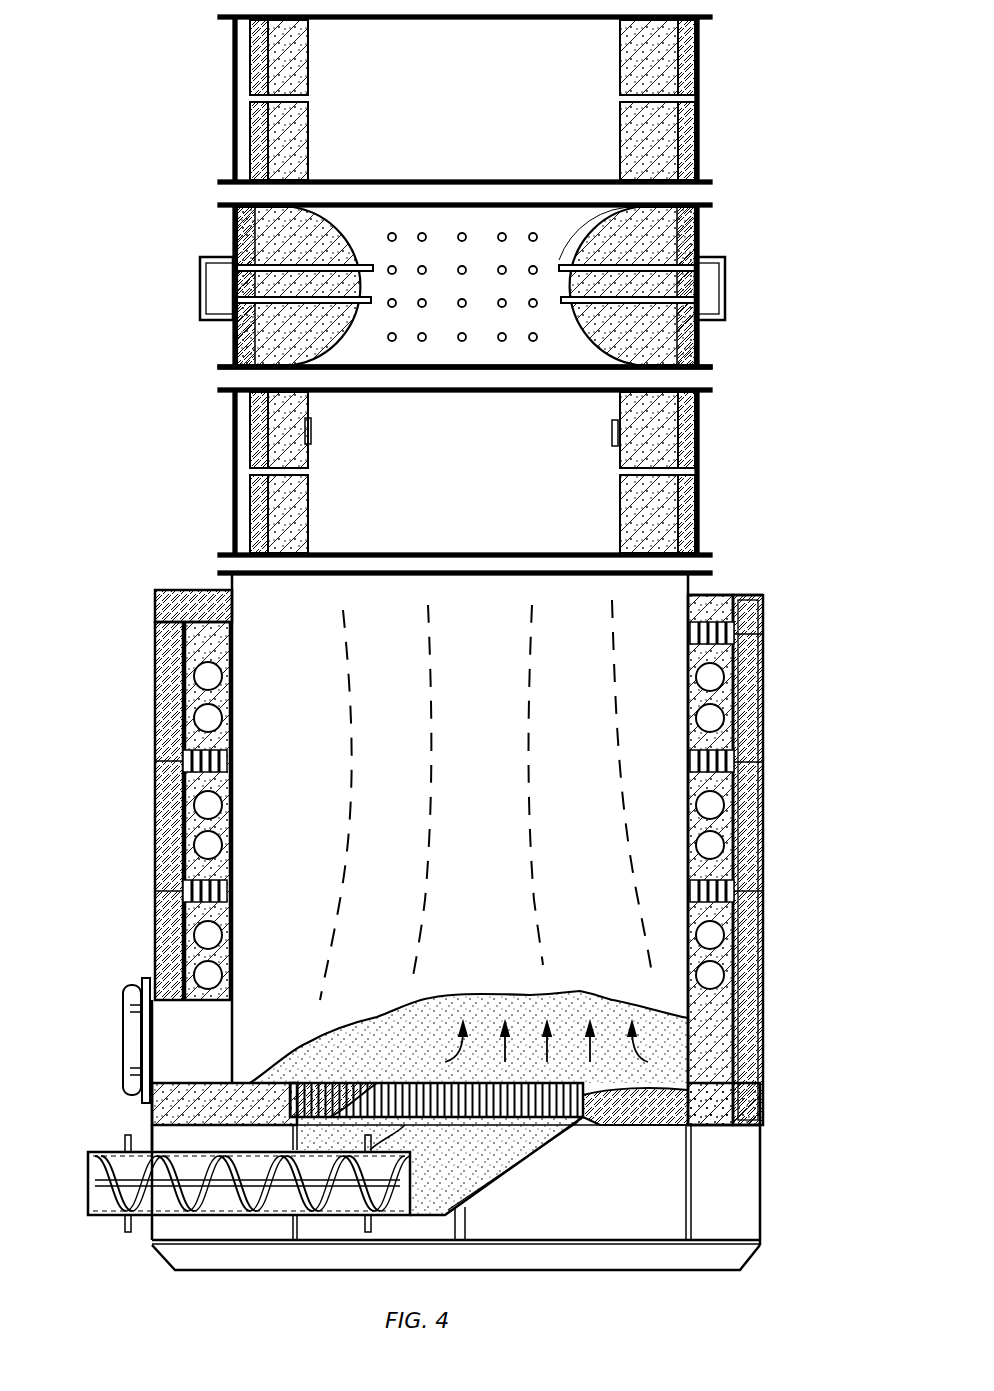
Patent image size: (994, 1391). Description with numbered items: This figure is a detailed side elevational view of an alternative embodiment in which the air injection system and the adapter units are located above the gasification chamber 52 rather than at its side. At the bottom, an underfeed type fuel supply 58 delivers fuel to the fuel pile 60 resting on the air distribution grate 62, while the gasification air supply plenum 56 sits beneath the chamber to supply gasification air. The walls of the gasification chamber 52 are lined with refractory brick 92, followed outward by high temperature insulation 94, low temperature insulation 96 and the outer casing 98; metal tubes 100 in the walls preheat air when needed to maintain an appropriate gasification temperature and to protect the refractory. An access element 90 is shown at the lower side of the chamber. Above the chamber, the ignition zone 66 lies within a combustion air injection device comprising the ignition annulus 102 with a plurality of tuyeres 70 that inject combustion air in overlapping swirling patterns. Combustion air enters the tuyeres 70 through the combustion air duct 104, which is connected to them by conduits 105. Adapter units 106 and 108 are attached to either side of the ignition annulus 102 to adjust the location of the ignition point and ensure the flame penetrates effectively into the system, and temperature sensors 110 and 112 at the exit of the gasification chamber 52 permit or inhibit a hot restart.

The gasification chamber 52 is at (486, 814).
The gasification air supply plenum 56 is at (609, 1208).
The underfeed type fuel supply 58 is at (98, 1175).
The fuel pile 60 is at (480, 1000).
The air distribution grate 62 is at (560, 1120).
The ignition zone 66 is at (448, 362).
The tuyeres 70 is at (465, 233).
The access door 90 is at (123, 1000).
The refractory brick 92 is at (690, 708).
The high temperature insulation 94 is at (735, 745).
The low temperature insulation 96 is at (750, 802).
The outer casing 98 is at (763, 845).
The metal tubes 100 is at (215, 845).
The ignition annulus 102 is at (383, 205).
The combustion air duct 104 is at (200, 270).
The conduits 105 is at (592, 222).
The adapter unit 106 is at (705, 463).
The adapter unit 108 is at (706, 96).
The temperature sensor 110 is at (311, 431).
The temperature sensor 112 is at (612, 432).